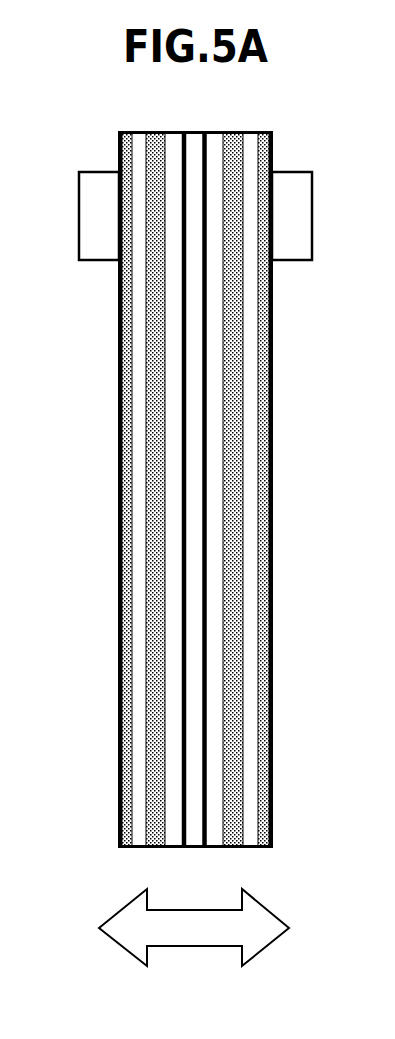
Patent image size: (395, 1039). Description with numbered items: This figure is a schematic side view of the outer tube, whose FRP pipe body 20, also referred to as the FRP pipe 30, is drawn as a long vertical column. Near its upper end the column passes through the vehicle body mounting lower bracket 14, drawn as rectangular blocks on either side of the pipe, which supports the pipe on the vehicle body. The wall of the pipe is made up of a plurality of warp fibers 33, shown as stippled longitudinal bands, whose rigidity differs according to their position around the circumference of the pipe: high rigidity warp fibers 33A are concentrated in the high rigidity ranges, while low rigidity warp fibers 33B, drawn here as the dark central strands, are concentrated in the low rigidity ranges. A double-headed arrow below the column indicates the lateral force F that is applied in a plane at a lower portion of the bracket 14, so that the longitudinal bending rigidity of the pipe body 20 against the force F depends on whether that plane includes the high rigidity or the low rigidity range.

The vehicle body mounting lower bracket 14 is at (88, 215).
The FRP pipe body 20 is at (113, 344).
The FRP pipe 30 is at (113, 389).
The warp fibers 33 is at (120, 445).
The high rigidity warp fibers 33A is at (121, 487).
The low rigidity warp fibers 33B is at (197, 525).
The lateral force F is at (195, 937).